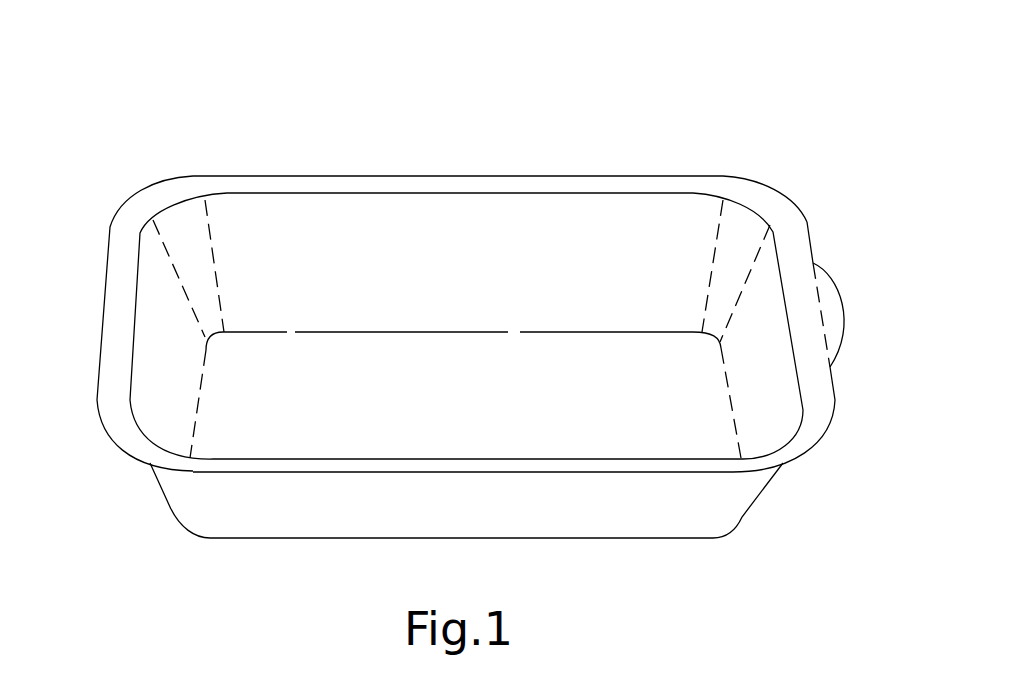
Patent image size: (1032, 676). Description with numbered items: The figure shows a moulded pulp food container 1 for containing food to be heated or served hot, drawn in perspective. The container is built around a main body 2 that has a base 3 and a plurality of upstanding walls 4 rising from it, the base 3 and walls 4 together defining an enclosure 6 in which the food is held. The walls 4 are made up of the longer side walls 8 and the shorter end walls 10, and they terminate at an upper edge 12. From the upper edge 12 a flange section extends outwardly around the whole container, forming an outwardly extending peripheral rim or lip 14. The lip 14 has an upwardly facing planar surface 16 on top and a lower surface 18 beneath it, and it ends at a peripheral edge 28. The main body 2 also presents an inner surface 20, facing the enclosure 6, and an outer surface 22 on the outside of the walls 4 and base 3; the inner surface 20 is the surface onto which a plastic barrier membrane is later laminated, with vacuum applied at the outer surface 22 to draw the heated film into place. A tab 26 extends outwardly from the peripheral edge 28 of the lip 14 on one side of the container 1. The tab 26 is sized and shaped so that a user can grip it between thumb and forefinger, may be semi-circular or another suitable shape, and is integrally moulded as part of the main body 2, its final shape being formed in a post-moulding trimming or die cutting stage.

The food container 1 is at (770, 165).
The main body 2 is at (130, 188).
The base 3 is at (470, 408).
The upstanding walls 4 is at (602, 237).
The enclosure 6 is at (411, 224).
The side walls 8 is at (422, 500).
The end walls 10 is at (162, 320).
The upper edge 12 is at (265, 190).
The peripheral rim or lip 14 is at (508, 187).
The upwardly facing planar surface 16 is at (137, 443).
The lower surface 18 is at (808, 454).
The inner surface 20 is at (332, 230).
The outer surface 22 is at (297, 500).
The tab 26 is at (838, 293).
The peripheral edge 28 is at (807, 218).